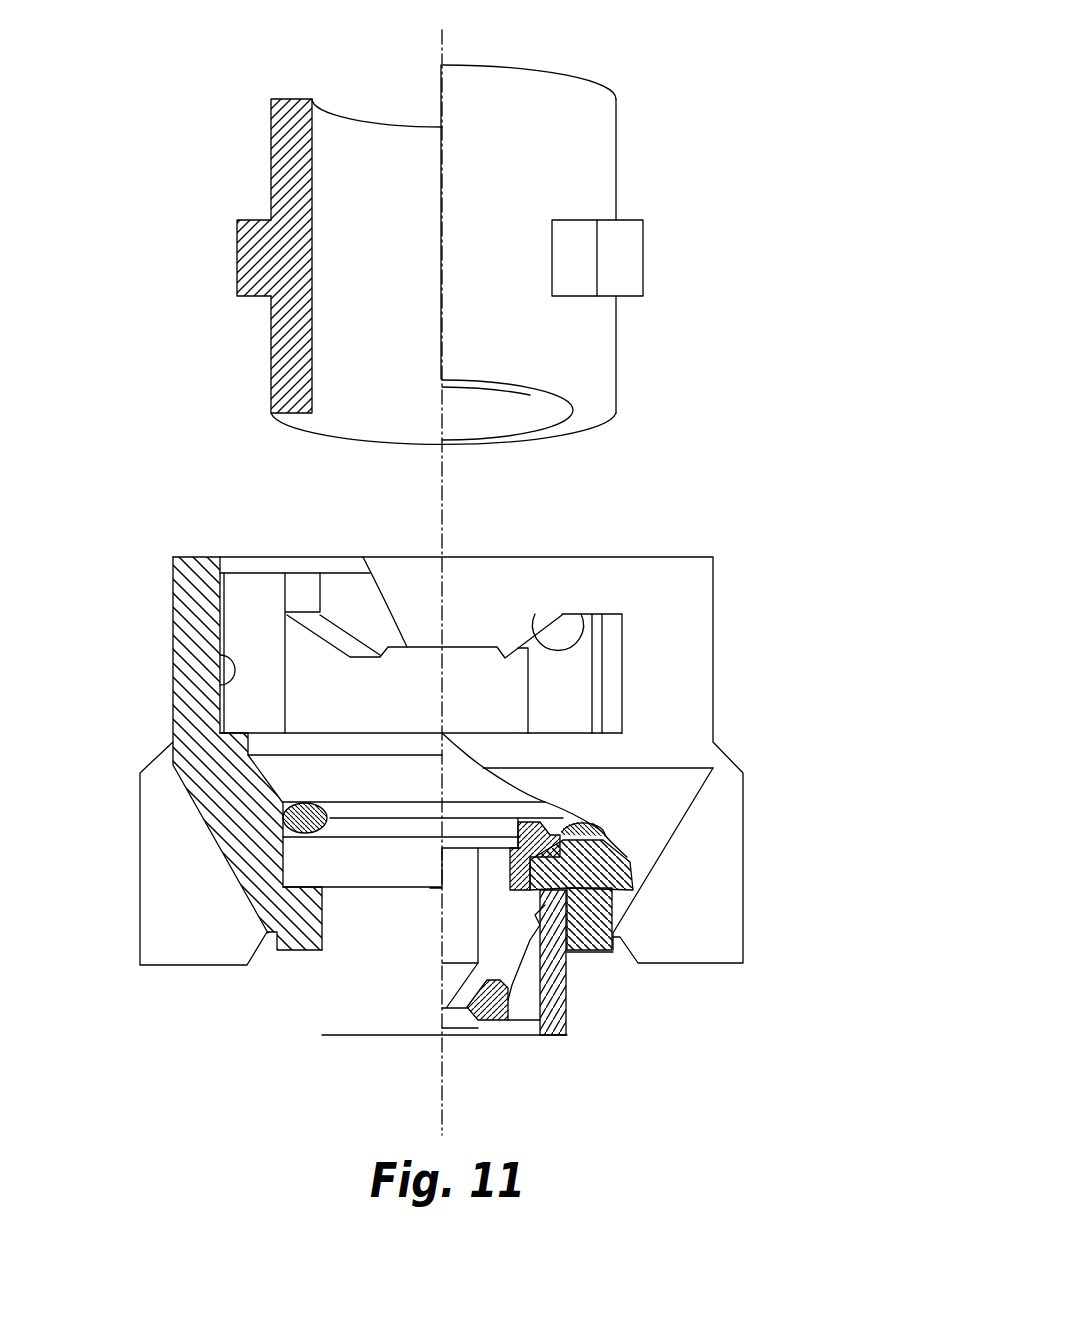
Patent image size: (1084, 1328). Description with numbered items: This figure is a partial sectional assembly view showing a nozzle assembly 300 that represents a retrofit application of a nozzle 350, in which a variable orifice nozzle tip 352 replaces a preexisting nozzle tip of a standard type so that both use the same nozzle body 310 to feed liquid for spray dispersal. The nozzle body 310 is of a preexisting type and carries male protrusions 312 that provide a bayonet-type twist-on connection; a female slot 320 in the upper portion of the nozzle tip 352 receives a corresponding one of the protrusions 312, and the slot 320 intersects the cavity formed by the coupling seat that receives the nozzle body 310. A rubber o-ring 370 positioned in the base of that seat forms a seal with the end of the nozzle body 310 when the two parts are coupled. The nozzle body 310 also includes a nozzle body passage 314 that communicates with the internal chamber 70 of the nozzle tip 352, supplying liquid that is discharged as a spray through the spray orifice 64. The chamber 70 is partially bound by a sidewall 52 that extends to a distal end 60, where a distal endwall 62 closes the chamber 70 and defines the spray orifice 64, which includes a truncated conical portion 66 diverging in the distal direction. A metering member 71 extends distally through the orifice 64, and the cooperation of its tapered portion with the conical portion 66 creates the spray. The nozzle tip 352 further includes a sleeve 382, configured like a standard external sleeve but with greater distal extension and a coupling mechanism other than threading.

The nozzle assembly 300 is at (758, 106).
The nozzle body 310 is at (616, 164).
The male protrusions 312 is at (237, 240).
The nozzle body passage 314 is at (370, 447).
The female slot 320 is at (214, 687).
The nozzle 350 is at (663, 553).
The nozzle tip 352 is at (603, 861).
The rubber o-ring 370 is at (287, 812).
The sleeve 382 is at (570, 1000).
The metering member 71 is at (565, 887).
The internal chamber 70 is at (480, 905).
The sidewall 52 is at (583, 952).
The distal end 60 is at (505, 1037).
The distal endwall 62 is at (535, 1040).
The spray orifice 64 is at (440, 1015).
The truncated conical portion 66 is at (468, 1040).